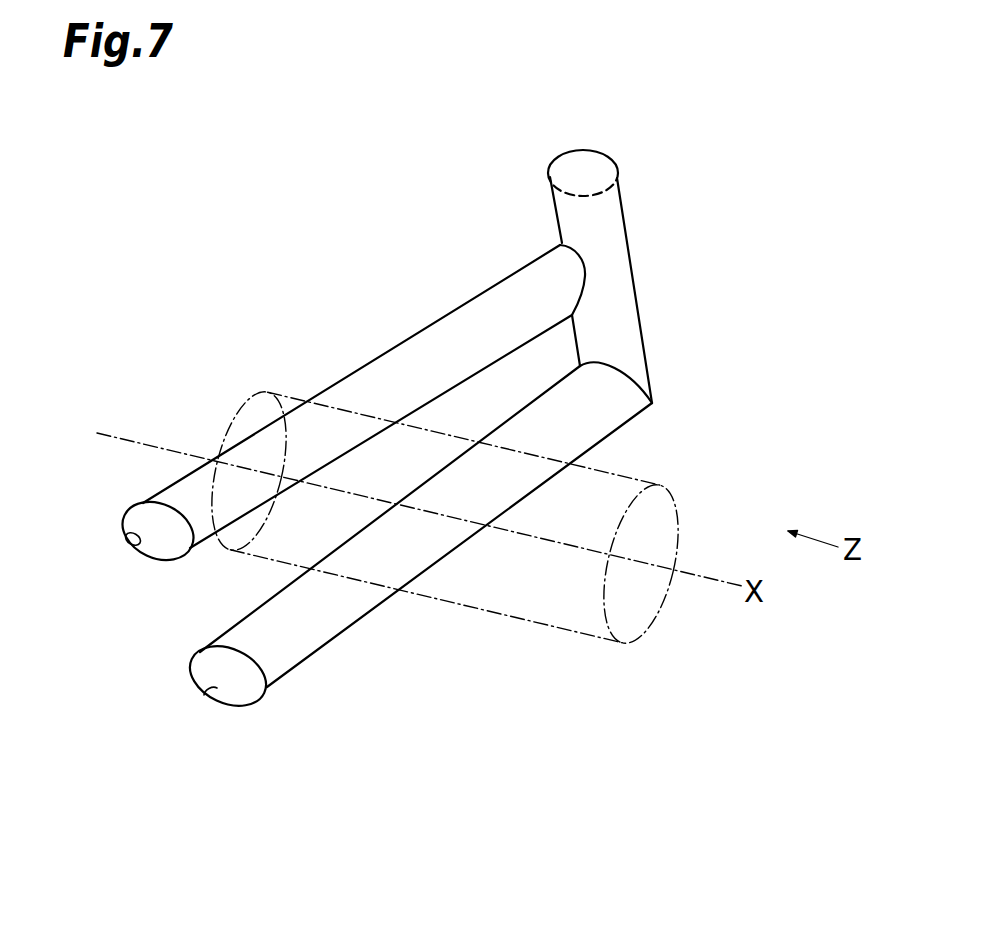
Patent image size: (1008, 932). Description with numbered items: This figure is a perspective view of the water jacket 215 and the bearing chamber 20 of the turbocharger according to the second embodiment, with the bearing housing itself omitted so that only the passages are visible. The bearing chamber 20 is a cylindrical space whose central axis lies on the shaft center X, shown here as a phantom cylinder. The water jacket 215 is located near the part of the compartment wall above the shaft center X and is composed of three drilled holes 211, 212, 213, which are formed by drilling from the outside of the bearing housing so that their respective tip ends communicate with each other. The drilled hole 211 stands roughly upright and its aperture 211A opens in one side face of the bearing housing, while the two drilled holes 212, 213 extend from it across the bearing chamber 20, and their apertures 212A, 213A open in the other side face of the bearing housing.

The bearing chamber 20 is at (635, 605).
The water jacket 215 is at (725, 265).
The drilled hole 211 is at (649, 259).
The aperture 211A is at (578, 151).
The drilled hole 212 is at (412, 565).
The aperture 212A is at (215, 700).
The drilled hole 213 is at (340, 427).
The aperture 213A is at (138, 546).